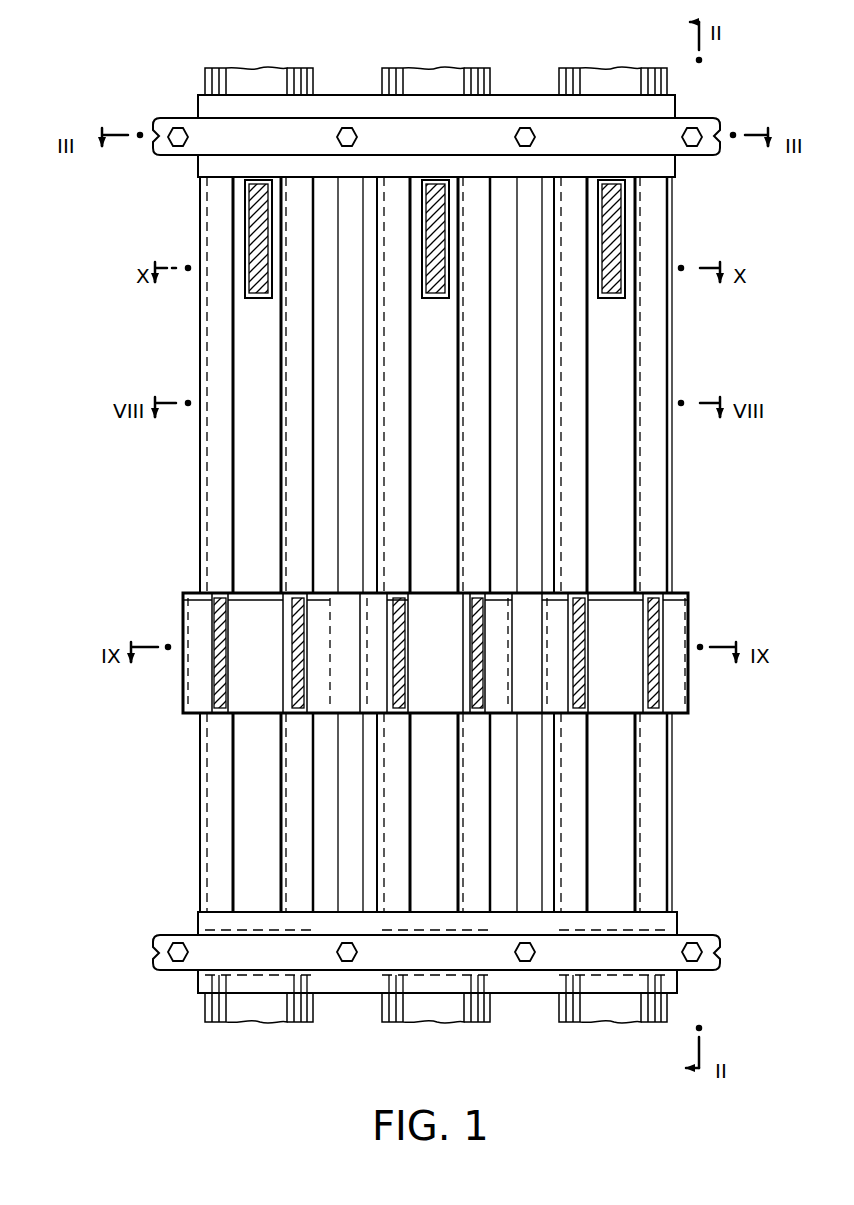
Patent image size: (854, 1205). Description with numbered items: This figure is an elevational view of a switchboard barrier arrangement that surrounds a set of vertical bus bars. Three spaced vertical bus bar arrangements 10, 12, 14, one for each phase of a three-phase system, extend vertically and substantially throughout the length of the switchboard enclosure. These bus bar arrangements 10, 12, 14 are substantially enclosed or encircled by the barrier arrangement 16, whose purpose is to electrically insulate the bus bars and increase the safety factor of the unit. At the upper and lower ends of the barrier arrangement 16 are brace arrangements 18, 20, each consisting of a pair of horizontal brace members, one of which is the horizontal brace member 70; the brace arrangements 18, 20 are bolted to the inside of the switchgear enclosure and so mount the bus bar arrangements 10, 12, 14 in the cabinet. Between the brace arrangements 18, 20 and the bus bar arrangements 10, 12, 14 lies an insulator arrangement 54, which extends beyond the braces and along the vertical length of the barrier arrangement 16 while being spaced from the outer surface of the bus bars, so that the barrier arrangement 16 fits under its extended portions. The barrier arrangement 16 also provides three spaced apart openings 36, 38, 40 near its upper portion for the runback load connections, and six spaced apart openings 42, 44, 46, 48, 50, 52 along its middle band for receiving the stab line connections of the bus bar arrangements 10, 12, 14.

The vertical bus bar arrangement 10 is at (613, 77).
The vertical bus bar arrangement 12 is at (438, 75).
The vertical bus bar arrangement 14 is at (262, 75).
The barrier arrangement 16 is at (690, 820).
The brace arrangement 18 is at (172, 95).
The brace arrangement 20 is at (172, 984).
The opening 36 is at (616, 290).
The opening 38 is at (442, 290).
The opening 40 is at (264, 290).
The opening 42 is at (660, 698).
The opening 44 is at (580, 698).
The opening 46 is at (476, 680).
The opening 48 is at (403, 628).
The opening 50 is at (296, 696).
The opening 52 is at (214, 700).
The insulator arrangement 54 is at (205, 170).
The horizontal brace member 70 is at (318, 125).